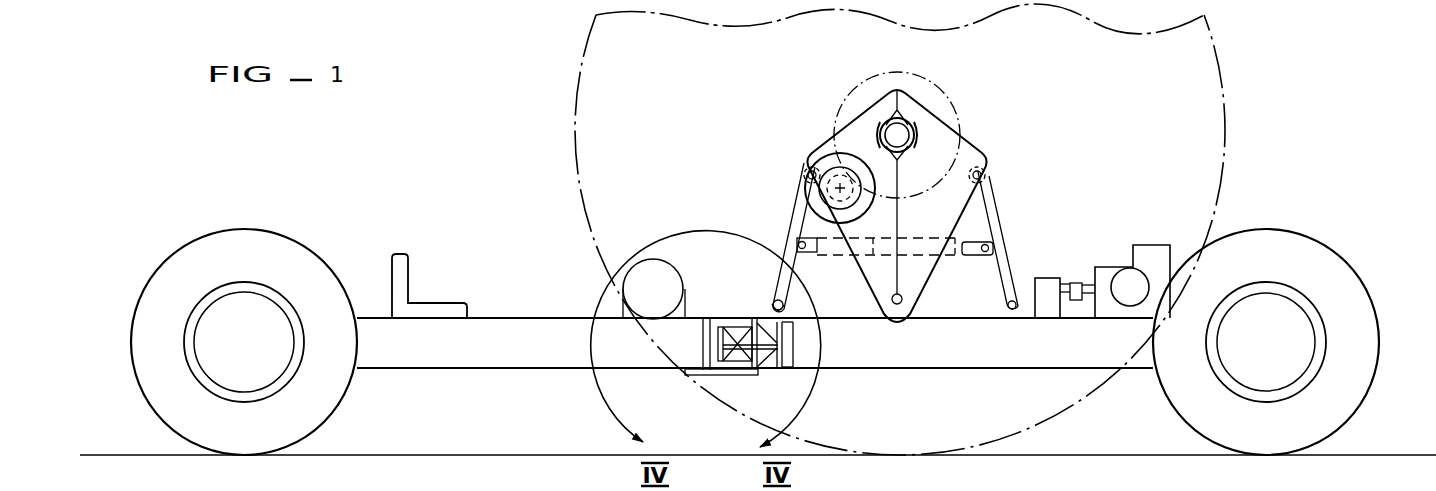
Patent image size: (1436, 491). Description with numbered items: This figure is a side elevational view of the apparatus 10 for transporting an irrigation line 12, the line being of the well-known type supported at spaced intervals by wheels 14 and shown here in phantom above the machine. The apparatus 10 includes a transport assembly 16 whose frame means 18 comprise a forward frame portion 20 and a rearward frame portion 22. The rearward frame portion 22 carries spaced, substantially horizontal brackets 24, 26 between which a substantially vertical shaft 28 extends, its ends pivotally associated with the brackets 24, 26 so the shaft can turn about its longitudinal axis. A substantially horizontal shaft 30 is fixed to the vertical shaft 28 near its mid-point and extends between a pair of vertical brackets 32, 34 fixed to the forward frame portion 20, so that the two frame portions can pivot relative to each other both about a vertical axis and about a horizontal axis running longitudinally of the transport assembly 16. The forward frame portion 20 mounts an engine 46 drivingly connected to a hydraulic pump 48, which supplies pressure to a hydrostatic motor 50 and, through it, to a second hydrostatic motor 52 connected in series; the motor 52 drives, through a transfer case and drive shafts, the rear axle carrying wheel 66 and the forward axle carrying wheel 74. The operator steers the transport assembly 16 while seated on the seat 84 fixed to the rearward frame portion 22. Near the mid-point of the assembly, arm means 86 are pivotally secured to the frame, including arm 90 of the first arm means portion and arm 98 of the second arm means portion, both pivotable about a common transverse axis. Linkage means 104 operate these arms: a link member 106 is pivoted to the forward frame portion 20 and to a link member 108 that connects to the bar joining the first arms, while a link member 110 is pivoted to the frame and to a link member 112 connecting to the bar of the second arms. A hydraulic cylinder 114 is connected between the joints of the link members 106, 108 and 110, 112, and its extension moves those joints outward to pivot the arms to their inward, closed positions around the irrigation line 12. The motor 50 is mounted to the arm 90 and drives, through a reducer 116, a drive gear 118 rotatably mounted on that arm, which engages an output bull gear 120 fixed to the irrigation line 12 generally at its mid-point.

The apparatus 10 is at (438, 200).
The irrigation line 12 is at (907, 120).
The wheels 14 is at (1222, 140).
The transport assembly 16 is at (647, 380).
The frame means 18 is at (947, 372).
The forward frame portion 20 is at (923, 362).
The rearward frame portion 22 is at (485, 357).
The bracket 24 is at (699, 314).
The bracket 26 is at (728, 376).
The vertical shaft 28 is at (760, 363).
The horizontal shaft 30 is at (763, 317).
The vertical bracket 32 is at (723, 350).
The vertical bracket 34 is at (758, 361).
The engine 46 is at (1143, 247).
The hydraulic pump 48 is at (1042, 300).
The hydrostatic motor 50 is at (853, 187).
The hydrostatic motor 52 is at (662, 273).
The wheel 66 is at (342, 405).
The wheel 74 is at (1372, 300).
The seat 84 is at (428, 310).
The arm means 86 is at (981, 147).
The arm 90 is at (817, 155).
The arm 98 is at (990, 165).
The linkage means 104 is at (1058, 256).
The link member 106 is at (790, 280).
The link member 108 is at (805, 218).
The link member 110 is at (998, 270).
The link member 112 is at (987, 233).
The hydraulic cylinder 114 is at (958, 260).
The reducer 116 is at (832, 167).
The drive gear 118 is at (803, 182).
The output bull gear 120 is at (935, 83).